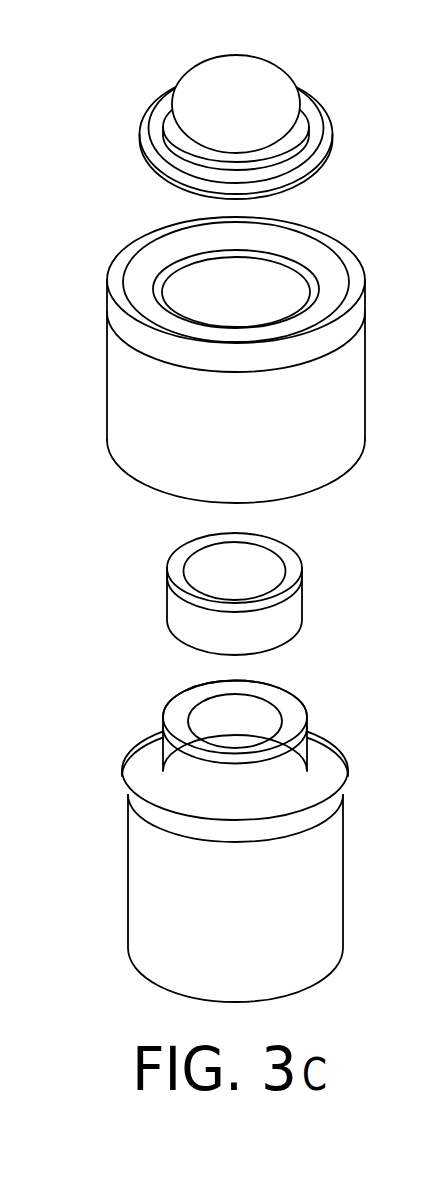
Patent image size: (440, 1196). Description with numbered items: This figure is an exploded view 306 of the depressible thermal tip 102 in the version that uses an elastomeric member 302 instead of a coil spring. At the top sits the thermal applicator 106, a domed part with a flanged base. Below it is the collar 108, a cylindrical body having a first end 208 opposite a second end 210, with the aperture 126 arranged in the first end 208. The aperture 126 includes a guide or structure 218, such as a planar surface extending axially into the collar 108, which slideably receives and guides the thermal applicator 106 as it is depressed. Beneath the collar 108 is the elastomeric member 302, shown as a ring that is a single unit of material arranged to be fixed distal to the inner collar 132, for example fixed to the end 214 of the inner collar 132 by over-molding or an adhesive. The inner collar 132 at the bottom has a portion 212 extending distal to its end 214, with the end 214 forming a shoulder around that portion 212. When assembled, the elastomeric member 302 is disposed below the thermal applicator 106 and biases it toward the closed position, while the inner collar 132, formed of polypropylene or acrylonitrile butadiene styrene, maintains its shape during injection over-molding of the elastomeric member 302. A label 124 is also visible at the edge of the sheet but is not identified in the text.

The exploded view 306 is at (147, 47).
The thermal applicator 106 is at (143, 145).
The guide or structure 218 is at (202, 255).
The aperture 126 is at (190, 288).
The first end 208 is at (107, 283).
The collar 108 is at (107, 364).
The second end 210 is at (108, 441).
The elastomeric member 302 is at (168, 595).
The portion 212 is at (180, 722).
The end 214 is at (145, 762).
The inner collar 132 is at (128, 867).
The channel 124 is at (18, 619).
The depressible thermal tip 102 is at (8, 708).